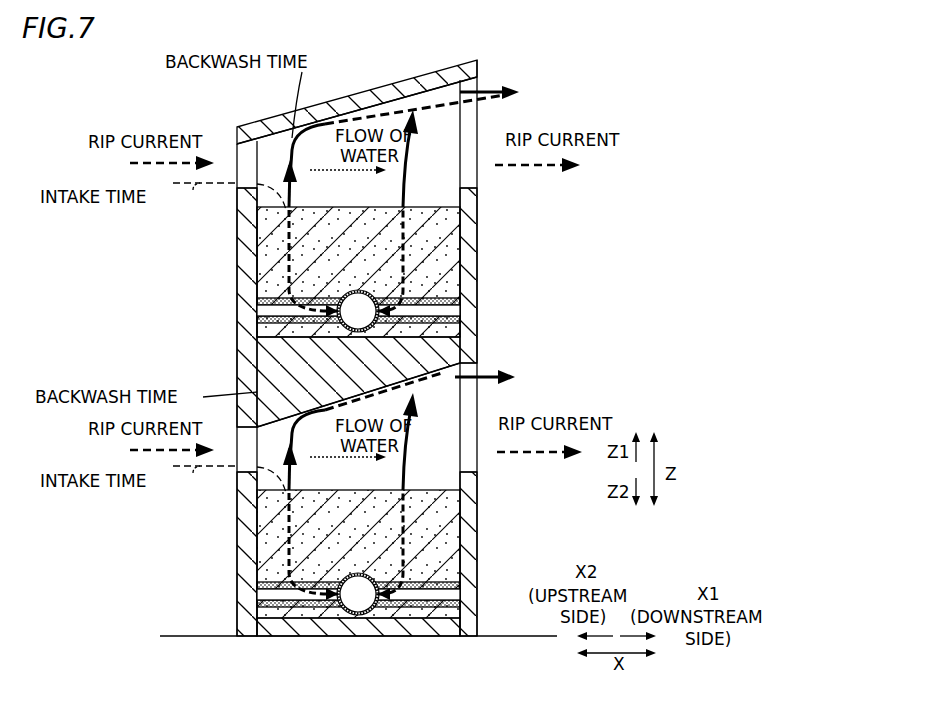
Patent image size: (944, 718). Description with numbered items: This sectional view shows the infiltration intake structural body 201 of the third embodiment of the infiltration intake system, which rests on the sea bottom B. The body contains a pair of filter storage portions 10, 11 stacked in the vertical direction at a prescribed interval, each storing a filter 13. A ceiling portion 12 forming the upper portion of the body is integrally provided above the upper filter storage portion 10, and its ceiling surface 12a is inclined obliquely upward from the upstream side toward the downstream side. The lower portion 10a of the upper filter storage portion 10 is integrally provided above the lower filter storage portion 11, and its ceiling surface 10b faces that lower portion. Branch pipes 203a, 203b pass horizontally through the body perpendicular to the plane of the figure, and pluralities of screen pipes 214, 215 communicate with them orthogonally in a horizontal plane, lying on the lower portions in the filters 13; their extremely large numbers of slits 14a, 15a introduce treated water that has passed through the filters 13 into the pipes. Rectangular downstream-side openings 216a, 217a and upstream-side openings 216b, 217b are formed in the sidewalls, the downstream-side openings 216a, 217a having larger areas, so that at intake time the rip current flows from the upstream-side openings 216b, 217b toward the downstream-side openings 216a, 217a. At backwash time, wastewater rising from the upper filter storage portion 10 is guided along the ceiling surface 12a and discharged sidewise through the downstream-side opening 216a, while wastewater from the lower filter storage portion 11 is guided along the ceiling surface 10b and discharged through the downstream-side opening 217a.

The upper filter storage portion 10 is at (474, 259).
The lower portion of upper filter storage portion 10a is at (262, 352).
The ceiling surface 10b is at (460, 383).
The lower filter storage portion 11 is at (474, 537).
The ceiling portion 12 is at (361, 97).
The ceiling surface 12a is at (392, 105).
The filter 13 is at (327, 207).
The slits 14a is at (257, 300).
The screen pipes 214 is at (460, 310).
The slits 15a is at (257, 582).
The screen pipes 215 is at (460, 594).
The infiltration intake structural body 201 is at (532, 80).
The branch pipe 203a is at (366, 291).
The branch pipe 203b is at (366, 574).
The downstream-side opening 216a is at (476, 190).
The upstream-side opening 216b is at (238, 190).
The downstream-side opening 217a is at (477, 474).
The upstream-side opening 217b is at (238, 474).
The sea bottom B is at (175, 636).